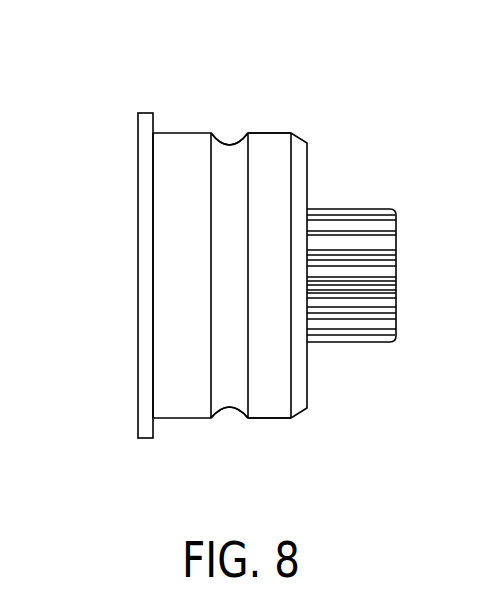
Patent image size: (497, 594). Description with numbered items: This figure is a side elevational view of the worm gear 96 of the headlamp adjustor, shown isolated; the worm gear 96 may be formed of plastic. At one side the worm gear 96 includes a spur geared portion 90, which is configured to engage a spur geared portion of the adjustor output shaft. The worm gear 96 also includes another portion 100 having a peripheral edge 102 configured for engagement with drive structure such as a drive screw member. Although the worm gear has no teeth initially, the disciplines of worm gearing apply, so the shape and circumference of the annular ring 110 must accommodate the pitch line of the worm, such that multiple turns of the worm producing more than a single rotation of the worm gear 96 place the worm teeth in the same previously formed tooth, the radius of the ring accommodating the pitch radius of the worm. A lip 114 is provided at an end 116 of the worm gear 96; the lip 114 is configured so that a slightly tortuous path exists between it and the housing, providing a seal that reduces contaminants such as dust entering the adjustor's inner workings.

The spur geared portion 90 is at (357, 342).
The worm gear 96 is at (263, 117).
The portion 100 is at (258, 412).
The peripheral edge 102 is at (200, 418).
The annular ring 110 is at (232, 142).
The lip 114 is at (153, 131).
The end 116 is at (137, 167).